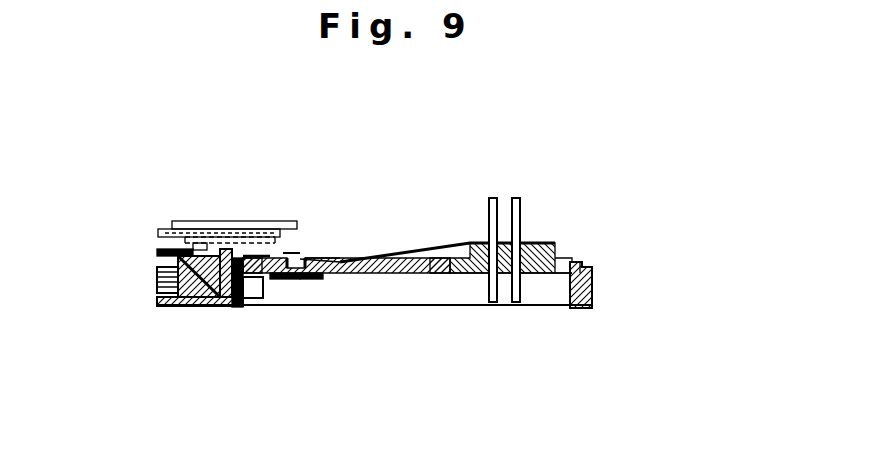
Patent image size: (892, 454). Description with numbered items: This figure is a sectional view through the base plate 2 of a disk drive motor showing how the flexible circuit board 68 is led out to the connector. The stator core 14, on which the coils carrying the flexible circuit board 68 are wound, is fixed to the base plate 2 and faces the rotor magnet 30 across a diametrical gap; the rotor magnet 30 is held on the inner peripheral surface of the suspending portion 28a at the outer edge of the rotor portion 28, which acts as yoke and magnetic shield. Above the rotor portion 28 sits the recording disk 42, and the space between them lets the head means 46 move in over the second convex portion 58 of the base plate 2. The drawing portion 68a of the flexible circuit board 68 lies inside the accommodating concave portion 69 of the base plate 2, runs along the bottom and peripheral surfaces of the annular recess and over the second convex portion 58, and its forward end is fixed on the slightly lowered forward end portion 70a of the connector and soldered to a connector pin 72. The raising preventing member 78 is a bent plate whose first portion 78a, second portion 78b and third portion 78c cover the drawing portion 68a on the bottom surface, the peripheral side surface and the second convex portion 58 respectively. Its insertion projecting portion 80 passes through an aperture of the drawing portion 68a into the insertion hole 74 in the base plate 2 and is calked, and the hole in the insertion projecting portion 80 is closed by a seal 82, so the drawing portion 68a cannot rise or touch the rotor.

The base plate 2 is at (598, 285).
The stator core 14 is at (157, 278).
The rotor portion 28 is at (197, 247).
The suspending portion 28a is at (221, 253).
The rotor magnet 30 is at (157, 265).
The recording disk 42 is at (283, 253).
The head means 46 is at (165, 233).
The second convex portion 58 is at (304, 257).
The flexible circuit board 68 is at (155, 303).
The drawing portion 68a is at (443, 252).
The accommodating concave portion 69 is at (163, 293).
The forward end portion of the connector 70a is at (558, 252).
The connector pin 72 is at (492, 198).
The insertion hole 74 is at (333, 257).
The raising preventing member 78 is at (173, 308).
The first portion 78a is at (208, 310).
The second portion 78b is at (227, 310).
The third portion 78c is at (253, 256).
The insertion projecting portion 80 is at (300, 310).
The seal 82 is at (333, 310).